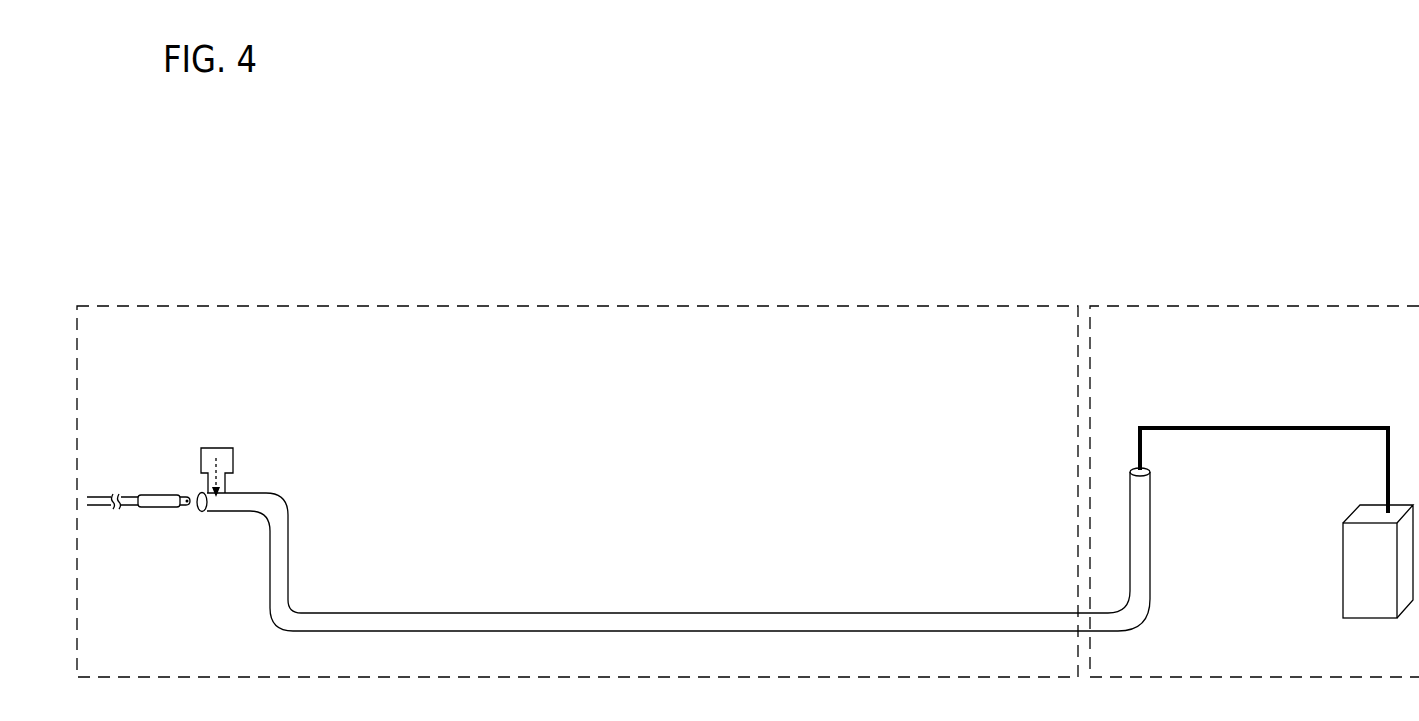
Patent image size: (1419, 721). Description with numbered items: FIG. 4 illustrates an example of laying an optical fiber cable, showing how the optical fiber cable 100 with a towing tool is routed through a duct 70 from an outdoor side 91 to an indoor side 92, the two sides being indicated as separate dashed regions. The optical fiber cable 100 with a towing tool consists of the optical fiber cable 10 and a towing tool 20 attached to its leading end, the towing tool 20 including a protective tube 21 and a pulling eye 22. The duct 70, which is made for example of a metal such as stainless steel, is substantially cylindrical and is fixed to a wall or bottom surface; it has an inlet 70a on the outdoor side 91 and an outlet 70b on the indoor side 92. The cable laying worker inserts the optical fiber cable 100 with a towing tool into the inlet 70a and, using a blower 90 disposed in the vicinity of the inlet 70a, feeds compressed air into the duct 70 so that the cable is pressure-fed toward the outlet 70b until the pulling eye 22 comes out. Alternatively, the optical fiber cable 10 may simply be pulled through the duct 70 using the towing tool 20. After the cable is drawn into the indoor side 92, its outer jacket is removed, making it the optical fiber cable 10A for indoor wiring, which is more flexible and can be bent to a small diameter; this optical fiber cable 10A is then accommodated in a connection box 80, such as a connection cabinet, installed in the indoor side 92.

The optical fiber cable 10 is at (131, 486).
The optical fiber cable with a towing tool 100 is at (148, 503).
The towing tool 20 is at (171, 554).
The protective tube 21 is at (150, 509).
The pulling eye 22 is at (182, 509).
The blower 90 is at (223, 447).
The duct 70 is at (793, 611).
The inlet 70a is at (200, 514).
The outlet 70b is at (1148, 470).
The optical fiber cable for indoor wiring 10A is at (1263, 426).
The connection box 80 is at (1342, 565).
The outdoor side 91 is at (765, 305).
The indoor side 92 is at (1332, 305).